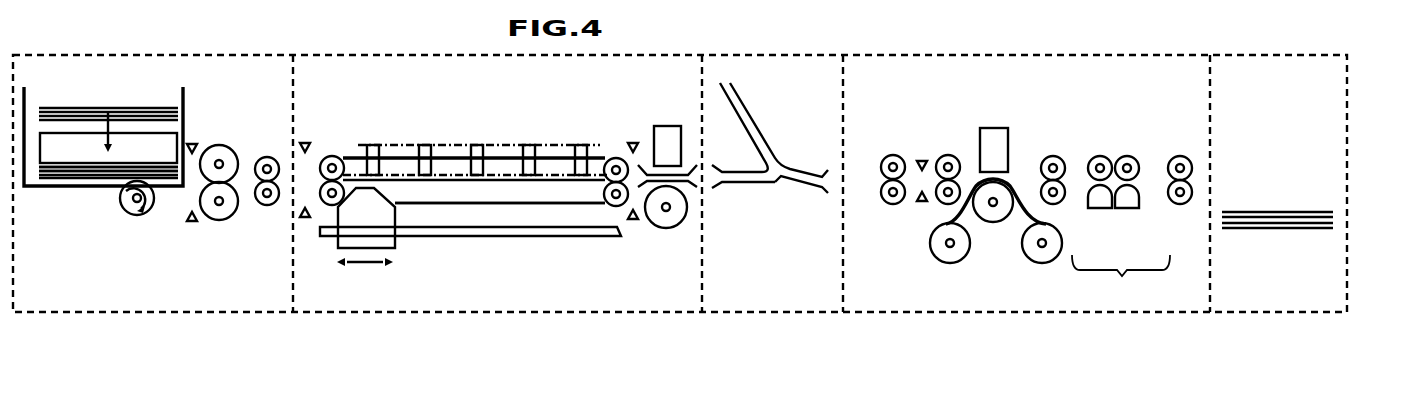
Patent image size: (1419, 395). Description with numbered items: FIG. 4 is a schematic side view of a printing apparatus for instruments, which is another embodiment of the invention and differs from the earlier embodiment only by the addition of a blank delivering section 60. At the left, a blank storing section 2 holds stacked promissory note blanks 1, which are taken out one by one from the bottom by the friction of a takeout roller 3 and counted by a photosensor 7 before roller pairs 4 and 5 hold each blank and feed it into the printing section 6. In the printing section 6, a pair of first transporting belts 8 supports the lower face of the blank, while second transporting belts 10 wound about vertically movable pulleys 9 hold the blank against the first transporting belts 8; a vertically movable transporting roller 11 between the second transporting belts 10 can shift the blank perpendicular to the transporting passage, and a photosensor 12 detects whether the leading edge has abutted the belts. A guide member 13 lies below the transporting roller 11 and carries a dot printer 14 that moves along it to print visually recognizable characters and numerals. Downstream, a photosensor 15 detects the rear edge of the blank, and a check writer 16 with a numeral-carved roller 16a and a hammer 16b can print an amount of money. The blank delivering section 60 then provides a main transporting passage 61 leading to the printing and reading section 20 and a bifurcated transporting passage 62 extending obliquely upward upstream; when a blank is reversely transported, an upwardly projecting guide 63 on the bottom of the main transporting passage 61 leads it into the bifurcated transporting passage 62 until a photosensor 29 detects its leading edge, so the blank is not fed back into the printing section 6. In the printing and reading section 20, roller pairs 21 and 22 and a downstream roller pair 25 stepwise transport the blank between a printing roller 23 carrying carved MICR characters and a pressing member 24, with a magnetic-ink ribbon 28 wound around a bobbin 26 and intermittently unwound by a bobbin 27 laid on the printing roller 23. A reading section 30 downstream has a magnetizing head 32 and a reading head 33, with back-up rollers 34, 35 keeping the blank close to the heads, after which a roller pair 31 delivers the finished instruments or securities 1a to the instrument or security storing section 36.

The promissory note blank 1 is at (63, 175).
The instrument or security 1a is at (1258, 210).
The blank storing section 2 is at (61, 99).
The takeout roller 3 is at (123, 200).
The roller pair 4 is at (218, 221).
The roller pair 5 is at (267, 208).
The printing section 6 is at (538, 305).
The photosensor 7 is at (192, 230).
The first transporting belts 8 is at (543, 205).
The pulleys 9 is at (328, 155).
The second transporting belts 10 is at (348, 157).
The transporting roller 11 is at (500, 137).
The photosensor 12 is at (305, 135).
The guide member 13 is at (482, 237).
The dot printer 14 is at (355, 233).
The photosensor 15 is at (633, 230).
The check writer 16 is at (643, 128).
The roller 16a is at (667, 222).
The hammer 16b is at (668, 133).
The printing and reading section 20 is at (1054, 89).
The roller pair 21 is at (891, 151).
The roller pair 22 is at (951, 148).
The printing roller 23 is at (993, 215).
The pressing member 24 is at (997, 135).
The roller pair 25 is at (1057, 150).
The bobbin 26 is at (940, 253).
The bobbin 27 is at (1042, 257).
The ribbon 28 is at (958, 212).
The photosensor 29 is at (921, 150).
The reading section 30 is at (1121, 280).
The roller pair 31 is at (1182, 155).
The magnetizing head 32 is at (1098, 207).
The reading head 33 is at (1123, 207).
The back-up roller 34 is at (1102, 155).
The back-up roller 35 is at (1127, 155).
The instrument or security storing section 36 is at (1266, 115).
The blank delivering section 60 is at (764, 305).
The main transporting passage 61 is at (737, 183).
The bifurcated transporting passage 62 is at (742, 118).
The guide 63 is at (785, 182).